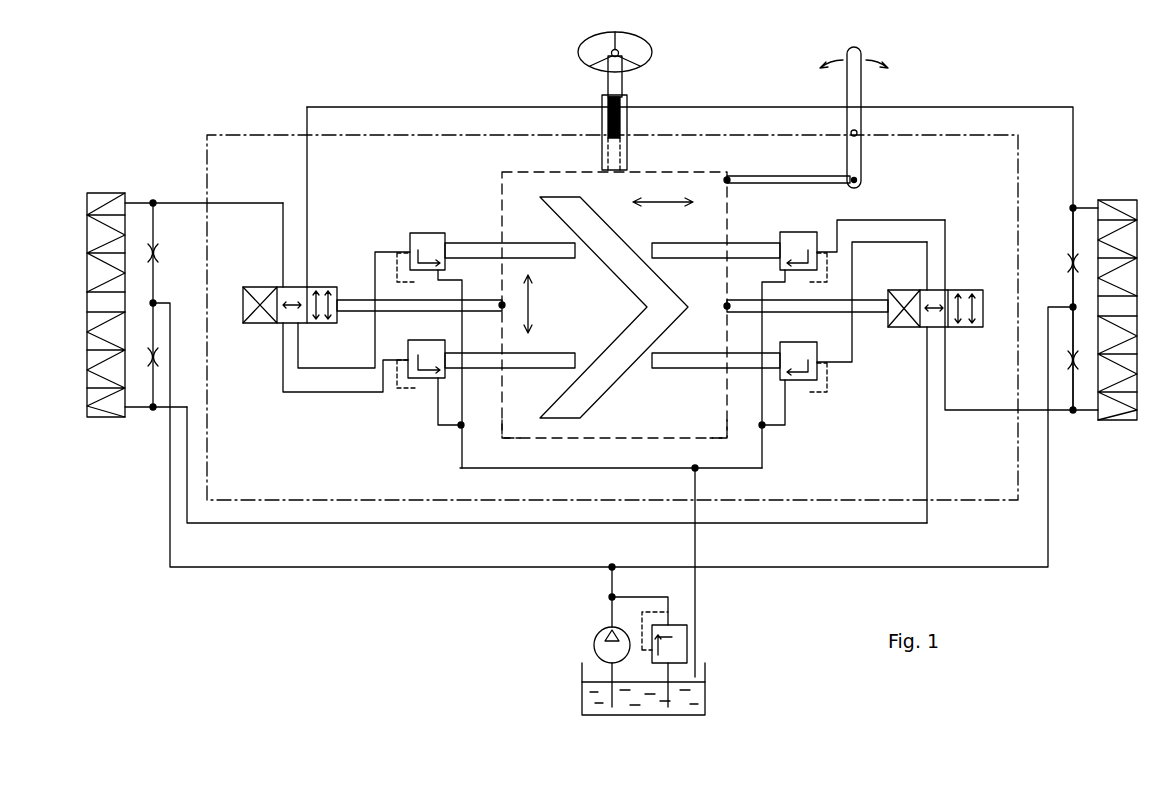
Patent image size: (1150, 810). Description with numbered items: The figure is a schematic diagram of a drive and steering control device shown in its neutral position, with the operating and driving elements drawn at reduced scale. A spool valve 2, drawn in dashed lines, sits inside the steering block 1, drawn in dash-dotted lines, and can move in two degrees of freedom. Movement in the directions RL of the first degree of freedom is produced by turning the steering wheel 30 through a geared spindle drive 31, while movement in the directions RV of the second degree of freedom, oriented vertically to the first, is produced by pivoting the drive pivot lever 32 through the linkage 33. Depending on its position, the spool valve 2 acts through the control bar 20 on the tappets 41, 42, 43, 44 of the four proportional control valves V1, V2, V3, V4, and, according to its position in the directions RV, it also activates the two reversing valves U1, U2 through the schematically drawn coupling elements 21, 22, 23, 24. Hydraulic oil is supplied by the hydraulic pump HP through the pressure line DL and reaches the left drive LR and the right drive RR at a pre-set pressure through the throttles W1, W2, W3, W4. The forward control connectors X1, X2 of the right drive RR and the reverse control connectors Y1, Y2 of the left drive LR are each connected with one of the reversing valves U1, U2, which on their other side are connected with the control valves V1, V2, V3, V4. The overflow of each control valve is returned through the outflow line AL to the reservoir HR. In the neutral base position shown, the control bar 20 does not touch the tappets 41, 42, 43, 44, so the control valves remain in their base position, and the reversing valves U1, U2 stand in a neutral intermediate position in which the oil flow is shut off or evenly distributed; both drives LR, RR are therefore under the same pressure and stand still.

The steering block 1 is at (283, 134).
The spool valve 2 is at (532, 170).
The control bar 20 is at (590, 395).
The coupling element 21 is at (510, 425).
The coupling element 22 is at (426, 308).
The coupling element 23 is at (728, 425).
The coupling element 24 is at (817, 307).
The steering wheel 30 is at (578, 57).
The geared spindle drive 31 is at (602, 100).
The drive pivot lever 32 is at (847, 84).
The linkage 33 is at (776, 176).
The tappet 41 is at (758, 252).
The tappet 42 is at (751, 364).
The tappet 43 is at (484, 250).
The tappet 44 is at (490, 362).
The control valve V1 is at (803, 243).
The control valve V2 is at (801, 382).
The control valve V3 is at (437, 240).
The control valve V4 is at (427, 380).
The reversing valve U1 is at (920, 327).
The reversing valve U2 is at (318, 323).
The throttle W1 is at (1080, 365).
The throttle W2 is at (1067, 263).
The throttle W3 is at (158, 357).
The throttle W4 is at (157, 253).
The forward control connector X1 is at (1073, 415).
The forward control connector X2 is at (1082, 205).
The reverse control connector Y1 is at (139, 410).
The reverse control connector Y2 is at (140, 203).
The left drive LR is at (114, 193).
The right drive RR is at (1125, 183).
The directions of the first degree of freedom RL is at (532, 310).
The directions of the second degree of freedom RV is at (676, 203).
The pressure line DL is at (515, 567).
The hydraulic pump HP is at (591, 635).
The outflow line AL is at (697, 649).
The reservoir HR is at (703, 700).